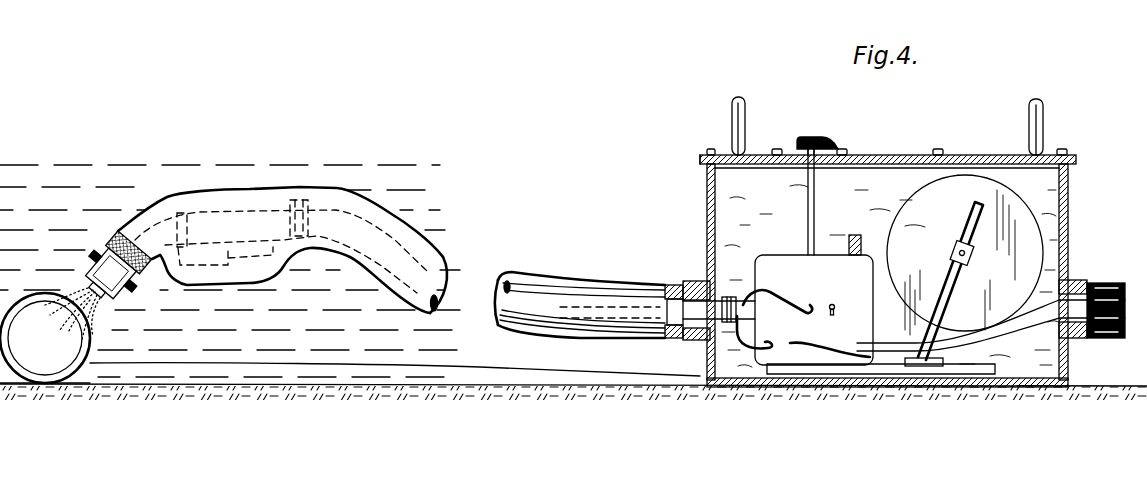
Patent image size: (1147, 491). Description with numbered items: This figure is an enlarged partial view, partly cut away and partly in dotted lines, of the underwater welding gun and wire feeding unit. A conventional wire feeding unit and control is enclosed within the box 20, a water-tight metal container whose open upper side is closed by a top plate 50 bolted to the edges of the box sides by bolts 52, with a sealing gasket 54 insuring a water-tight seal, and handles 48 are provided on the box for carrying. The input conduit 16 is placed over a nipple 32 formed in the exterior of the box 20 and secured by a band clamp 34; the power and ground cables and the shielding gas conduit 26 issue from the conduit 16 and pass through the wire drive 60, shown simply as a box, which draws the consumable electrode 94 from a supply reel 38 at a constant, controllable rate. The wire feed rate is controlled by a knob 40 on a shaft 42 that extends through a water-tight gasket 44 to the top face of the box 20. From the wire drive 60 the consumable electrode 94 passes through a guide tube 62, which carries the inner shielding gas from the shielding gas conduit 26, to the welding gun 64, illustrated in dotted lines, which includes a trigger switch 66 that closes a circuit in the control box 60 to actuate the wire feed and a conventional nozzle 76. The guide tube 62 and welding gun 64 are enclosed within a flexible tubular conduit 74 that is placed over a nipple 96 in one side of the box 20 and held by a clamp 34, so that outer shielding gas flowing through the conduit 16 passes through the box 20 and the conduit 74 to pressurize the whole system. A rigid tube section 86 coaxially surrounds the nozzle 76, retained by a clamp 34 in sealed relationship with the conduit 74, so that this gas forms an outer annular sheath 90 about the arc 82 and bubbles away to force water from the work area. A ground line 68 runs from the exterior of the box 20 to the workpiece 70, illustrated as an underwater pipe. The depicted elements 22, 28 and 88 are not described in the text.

The conduit 16 is at (1110, 339).
The box 20 is at (1069, 212).
The discharge pipe 22 is at (997, 345).
The shielding gas conduit 26 is at (770, 293).
The base plate 28 is at (865, 362).
The nipple 32 is at (1078, 285).
The band clamp 34 is at (112, 232).
The supply reel 38 is at (974, 187).
The knob 40 is at (812, 140).
The shaft 42 is at (808, 197).
The water-tight gasket 44 is at (836, 148).
The handles 48 is at (733, 101).
The top plate 50 is at (897, 156).
The bolts 52 is at (940, 152).
The sealing gasket 54 is at (703, 162).
The wire drive 60 is at (757, 262).
The guide tube 62 is at (390, 250).
The welding gun 64 is at (156, 222).
The trigger switch 66 is at (252, 270).
The ground line 68 is at (162, 365).
The workpiece 70 is at (90, 368).
The tubular conduit 74 is at (420, 250).
The nozzle 76 is at (110, 243).
The arc 82 is at (97, 291).
The tube section 86 is at (110, 291).
The bolts 88 is at (95, 248).
The outer annular sheath 90 is at (77, 290).
The consumable electrode 94 is at (110, 299).
The nipple 96 is at (690, 282).